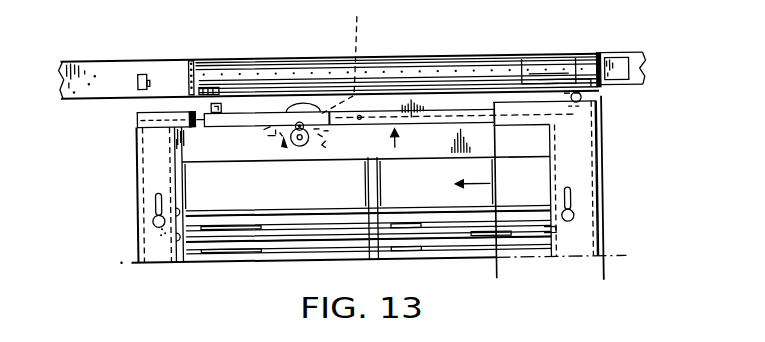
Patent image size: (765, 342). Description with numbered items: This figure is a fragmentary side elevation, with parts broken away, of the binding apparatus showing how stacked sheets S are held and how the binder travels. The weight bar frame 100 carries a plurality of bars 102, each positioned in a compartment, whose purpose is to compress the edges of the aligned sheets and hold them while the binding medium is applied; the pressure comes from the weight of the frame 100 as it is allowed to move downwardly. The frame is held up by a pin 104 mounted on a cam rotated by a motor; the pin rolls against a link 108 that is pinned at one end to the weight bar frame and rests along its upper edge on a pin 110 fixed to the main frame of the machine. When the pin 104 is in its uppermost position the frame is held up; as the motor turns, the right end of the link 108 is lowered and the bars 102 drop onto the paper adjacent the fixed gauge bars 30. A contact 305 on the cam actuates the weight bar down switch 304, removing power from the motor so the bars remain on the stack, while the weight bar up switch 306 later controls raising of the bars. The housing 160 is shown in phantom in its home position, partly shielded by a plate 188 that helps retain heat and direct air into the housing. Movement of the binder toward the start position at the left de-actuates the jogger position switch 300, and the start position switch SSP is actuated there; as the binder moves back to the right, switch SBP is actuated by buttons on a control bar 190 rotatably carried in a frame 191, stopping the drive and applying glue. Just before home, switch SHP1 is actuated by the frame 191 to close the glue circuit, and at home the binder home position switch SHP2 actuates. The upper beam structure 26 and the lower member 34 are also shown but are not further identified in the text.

The conveyor beam 26 is at (133, 55).
The start position switch SSP is at (146, 70).
The pin 104 is at (293, 119).
The link 108 is at (301, 122).
The contact 305 is at (359, 58).
The control bar 190 is at (381, 56).
The jogger position switch 300 is at (533, 64).
The switch SBP is at (578, 64).
The frame 191 is at (581, 66).
The switch SHP-1 SHP1 is at (572, 109).
The pin 110 is at (212, 102).
The weight bar up switch 306 is at (266, 137).
The weight bar down switch 304 is at (326, 138).
The fixed gauge bars 30 is at (365, 186).
The bars 102 is at (433, 232).
The binder home position switch SHP2 is at (584, 115).
The plate 188 is at (596, 136).
The weight bar frame 100 is at (598, 174).
The housing 160 is at (603, 268).
The sheets S is at (320, 240).
The shelf 34 is at (466, 248).